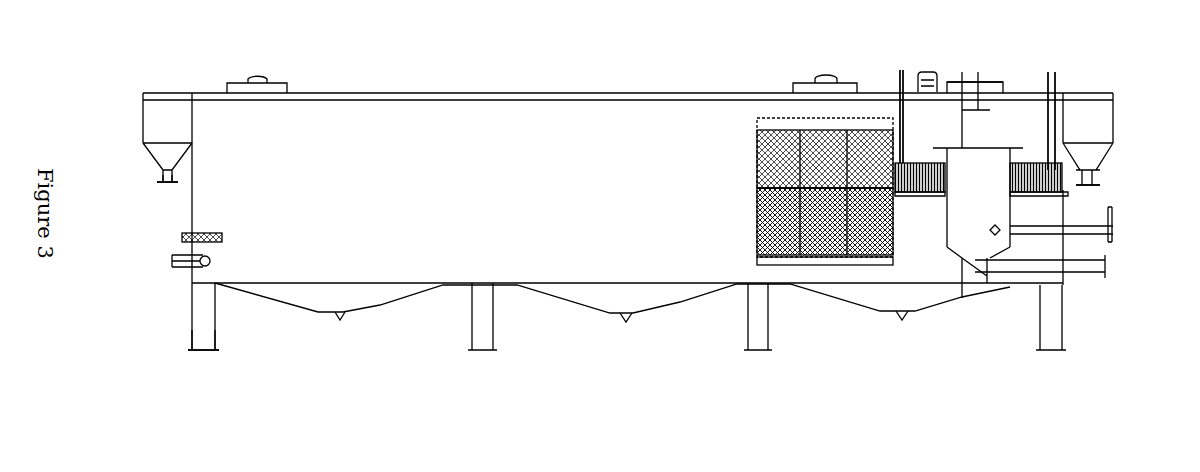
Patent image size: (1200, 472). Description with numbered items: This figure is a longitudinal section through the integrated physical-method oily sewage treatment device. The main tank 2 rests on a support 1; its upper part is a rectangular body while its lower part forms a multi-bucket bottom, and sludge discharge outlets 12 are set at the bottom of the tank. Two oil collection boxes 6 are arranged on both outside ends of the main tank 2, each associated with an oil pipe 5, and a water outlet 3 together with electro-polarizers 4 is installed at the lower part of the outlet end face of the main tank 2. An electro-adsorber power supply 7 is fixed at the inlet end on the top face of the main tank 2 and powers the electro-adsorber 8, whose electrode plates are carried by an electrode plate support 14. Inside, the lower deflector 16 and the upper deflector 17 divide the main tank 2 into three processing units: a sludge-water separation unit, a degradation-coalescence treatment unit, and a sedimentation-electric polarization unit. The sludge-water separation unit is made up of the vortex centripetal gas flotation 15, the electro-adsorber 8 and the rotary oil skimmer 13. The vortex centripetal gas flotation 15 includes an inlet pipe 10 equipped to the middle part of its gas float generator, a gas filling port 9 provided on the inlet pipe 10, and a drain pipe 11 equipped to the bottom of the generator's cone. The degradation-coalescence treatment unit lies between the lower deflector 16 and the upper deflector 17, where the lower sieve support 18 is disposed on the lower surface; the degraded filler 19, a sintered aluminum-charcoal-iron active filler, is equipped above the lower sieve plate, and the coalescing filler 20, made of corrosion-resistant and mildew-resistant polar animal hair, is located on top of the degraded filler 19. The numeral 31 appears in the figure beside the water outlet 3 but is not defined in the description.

The support 1 is at (196, 330).
The main tank 2 is at (190, 285).
The water outlet 3 is at (173, 264).
The roller 31 is at (209, 266).
The electro-polarizer 4 is at (183, 236).
The oil pipe 5 is at (163, 177).
The oil collection boxes 6 is at (157, 130).
The electro-adsorber power supply 7 is at (923, 72).
The electro-adsorber 8 is at (1065, 172).
The gas filling port 9 is at (1113, 215).
The inlet pipe 10 is at (1120, 233).
The drain pipe 11 is at (1105, 262).
The sludge discharge outlet 12 is at (341, 320).
The rotary oil skimmer 13 is at (977, 77).
The electrode plate support 14 is at (1028, 197).
The vortex centripetal gas flotation 15 is at (975, 218).
The lower deflector 16 is at (903, 195).
The upper deflector 17 is at (757, 256).
The lower sieve support 18 is at (823, 257).
The degraded filler 19 is at (776, 258).
The coalescing filler 20 is at (757, 188).